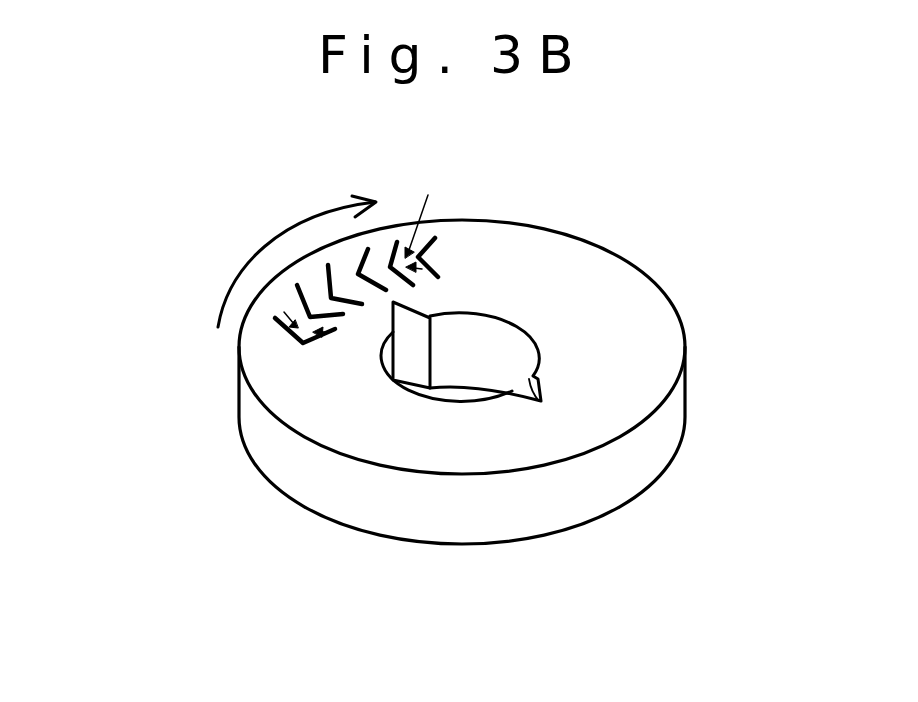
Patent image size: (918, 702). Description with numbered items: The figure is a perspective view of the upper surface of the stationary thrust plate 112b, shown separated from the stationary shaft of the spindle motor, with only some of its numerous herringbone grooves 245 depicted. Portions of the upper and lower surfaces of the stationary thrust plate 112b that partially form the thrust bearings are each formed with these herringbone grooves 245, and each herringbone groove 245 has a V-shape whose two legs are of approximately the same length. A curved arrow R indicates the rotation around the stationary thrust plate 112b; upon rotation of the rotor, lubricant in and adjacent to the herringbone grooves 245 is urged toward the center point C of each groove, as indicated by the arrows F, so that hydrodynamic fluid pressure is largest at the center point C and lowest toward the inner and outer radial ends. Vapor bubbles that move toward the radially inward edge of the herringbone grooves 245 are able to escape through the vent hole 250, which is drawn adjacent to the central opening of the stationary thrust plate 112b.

The stationary thrust plate 112b is at (653, 438).
The vent hole 250 is at (400, 313).
The herringbone grooves 245 is at (268, 337).
The center point C is at (302, 346).
The arrows F is at (284, 312).
The rotation direction R is at (297, 261).